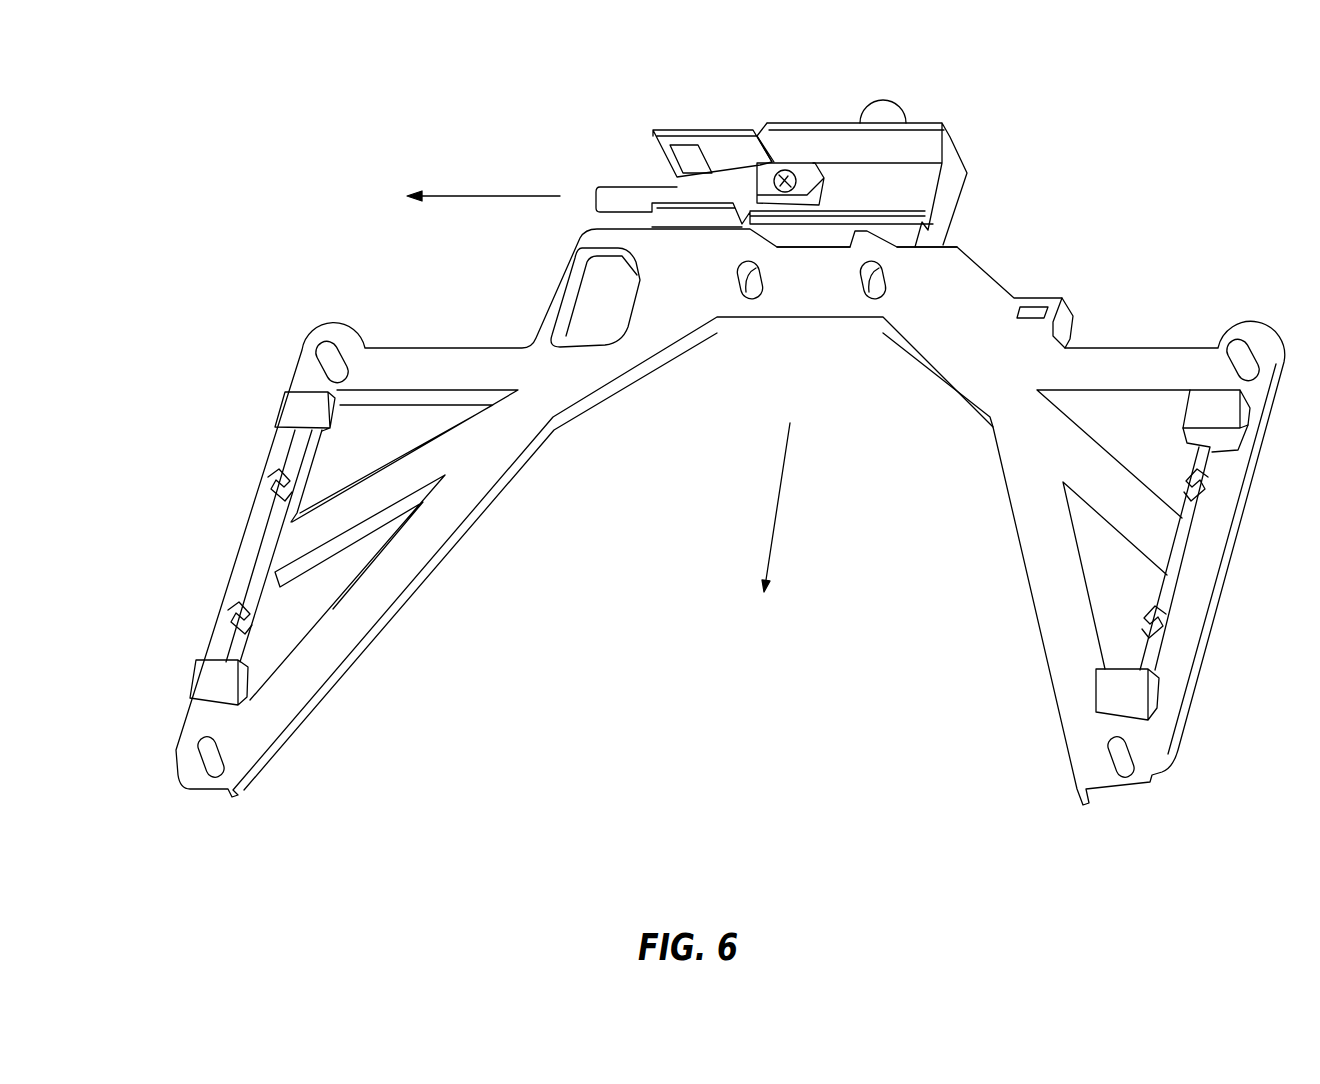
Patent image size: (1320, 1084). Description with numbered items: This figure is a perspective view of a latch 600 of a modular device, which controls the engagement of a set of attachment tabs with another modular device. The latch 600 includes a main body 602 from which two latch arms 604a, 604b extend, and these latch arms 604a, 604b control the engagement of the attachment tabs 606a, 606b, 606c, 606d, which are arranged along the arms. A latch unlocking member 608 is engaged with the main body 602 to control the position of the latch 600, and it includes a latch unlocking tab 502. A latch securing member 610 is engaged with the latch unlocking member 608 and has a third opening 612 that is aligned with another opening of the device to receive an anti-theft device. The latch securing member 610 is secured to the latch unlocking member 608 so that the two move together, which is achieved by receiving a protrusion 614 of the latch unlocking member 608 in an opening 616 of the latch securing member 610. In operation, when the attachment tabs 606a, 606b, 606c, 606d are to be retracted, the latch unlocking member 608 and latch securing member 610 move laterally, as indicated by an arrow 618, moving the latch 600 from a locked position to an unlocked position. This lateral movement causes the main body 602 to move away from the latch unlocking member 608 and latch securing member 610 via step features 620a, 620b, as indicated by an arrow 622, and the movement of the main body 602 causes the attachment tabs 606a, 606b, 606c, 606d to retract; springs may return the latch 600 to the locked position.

The latch 600 is at (803, 60).
The latch unlocking tab 502 is at (884, 99).
The main body 602 is at (988, 270).
The latch arm 604a is at (319, 558).
The latch arm 604b is at (1133, 523).
The attachment tab 606a is at (292, 415).
The attachment tab 606b is at (210, 685).
The attachment tab 606c is at (1215, 416).
The attachment tab 606d is at (1118, 688).
The latch unlocking member 608 is at (893, 152).
The latch securing member 610 is at (689, 134).
The third opening 612 is at (682, 157).
The protrusion 614 is at (773, 172).
The opening 616 is at (785, 184).
The arrow 618 is at (466, 200).
The step feature 620a is at (784, 232).
The step feature 620b is at (896, 232).
The arrow 622 is at (777, 503).